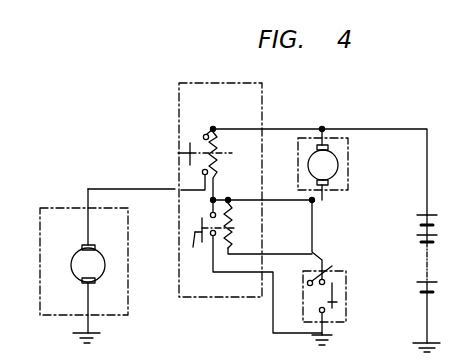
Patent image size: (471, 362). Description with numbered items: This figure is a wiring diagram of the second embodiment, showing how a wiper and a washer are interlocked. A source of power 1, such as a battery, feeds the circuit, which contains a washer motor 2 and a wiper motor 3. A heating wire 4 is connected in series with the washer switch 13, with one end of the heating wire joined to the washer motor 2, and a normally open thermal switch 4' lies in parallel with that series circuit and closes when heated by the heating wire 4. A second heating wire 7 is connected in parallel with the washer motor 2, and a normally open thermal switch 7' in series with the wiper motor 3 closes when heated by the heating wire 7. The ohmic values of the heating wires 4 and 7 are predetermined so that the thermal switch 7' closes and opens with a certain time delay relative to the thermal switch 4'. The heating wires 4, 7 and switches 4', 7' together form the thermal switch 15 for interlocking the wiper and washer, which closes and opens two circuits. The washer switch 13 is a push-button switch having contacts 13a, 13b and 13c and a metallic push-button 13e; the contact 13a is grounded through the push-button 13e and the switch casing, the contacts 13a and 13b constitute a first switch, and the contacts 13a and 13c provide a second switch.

The source of power 1 is at (427, 268).
The washer motor 2 is at (348, 140).
The wiper motor 3 is at (128, 223).
The heating wire 4 is at (245, 224).
The thermal switch 4' is at (209, 245).
The heating wire 7 is at (221, 164).
The thermal switch 7' is at (192, 154).
The washer switch 13 is at (346, 272).
The contact 13a is at (324, 313).
The contact 13b is at (339, 264).
The contact 13c is at (307, 285).
The metallic push-button 13e is at (336, 303).
The thermal switch 15 is at (262, 83).